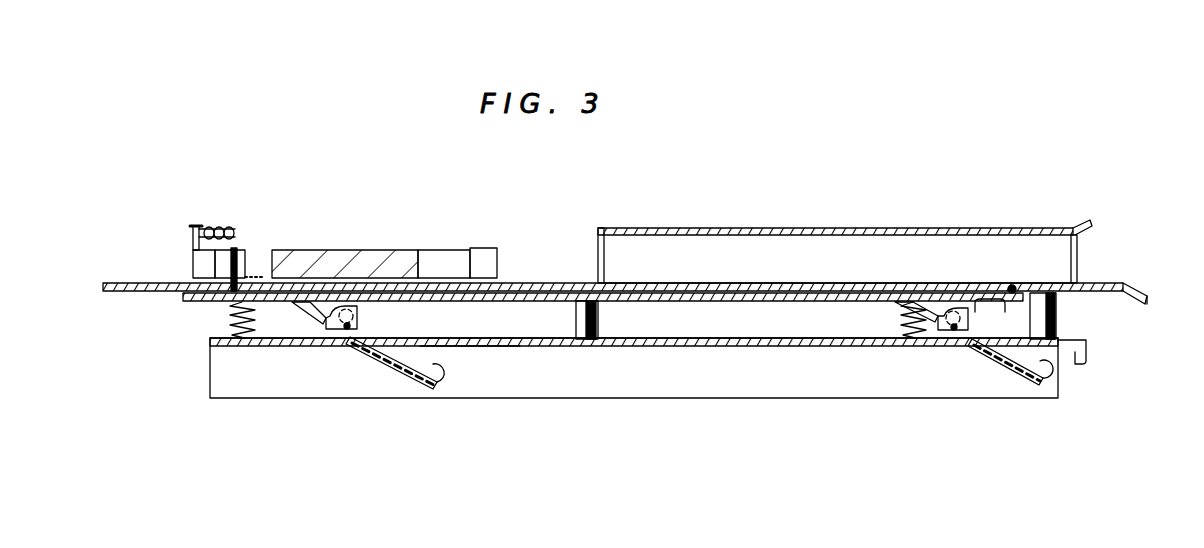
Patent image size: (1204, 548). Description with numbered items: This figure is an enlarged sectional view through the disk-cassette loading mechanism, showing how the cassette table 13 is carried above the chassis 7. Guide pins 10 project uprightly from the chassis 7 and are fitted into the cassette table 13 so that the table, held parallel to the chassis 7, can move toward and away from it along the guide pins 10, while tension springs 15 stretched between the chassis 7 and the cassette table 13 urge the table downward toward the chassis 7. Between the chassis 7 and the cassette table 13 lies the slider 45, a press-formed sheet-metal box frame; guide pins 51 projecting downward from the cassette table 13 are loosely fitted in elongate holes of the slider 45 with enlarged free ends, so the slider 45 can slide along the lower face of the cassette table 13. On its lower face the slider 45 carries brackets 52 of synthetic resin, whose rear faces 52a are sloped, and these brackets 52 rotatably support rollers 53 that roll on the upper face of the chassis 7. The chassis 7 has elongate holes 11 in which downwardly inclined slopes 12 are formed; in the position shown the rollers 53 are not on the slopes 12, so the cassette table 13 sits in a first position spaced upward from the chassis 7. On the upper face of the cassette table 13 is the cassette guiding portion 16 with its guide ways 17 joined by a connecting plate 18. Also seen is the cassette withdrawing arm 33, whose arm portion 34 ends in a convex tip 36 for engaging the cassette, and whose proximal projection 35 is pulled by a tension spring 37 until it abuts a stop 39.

The chassis 7 is at (773, 347).
The guide pins 10 is at (576, 311).
The elongate holes 11 is at (468, 347).
The slopes 12 is at (440, 382).
The cassette table 13 is at (1103, 282).
The tension springs 15 is at (224, 318).
The cassette guiding portion 16 is at (938, 252).
The guide ways 17 is at (787, 248).
The connecting plate 18 is at (1023, 232).
The cassette withdrawing arm 33 is at (440, 250).
The arm portion 34 is at (367, 250).
The projection 35 is at (193, 267).
The convex tip 36 is at (488, 252).
The tension spring 37 is at (222, 227).
The stop 39 is at (247, 250).
The slider 45 is at (848, 292).
The guide pins 51 is at (1014, 287).
The brackets 52 is at (323, 320).
The rear faces 52a is at (307, 316).
The rollers 53 is at (346, 330).